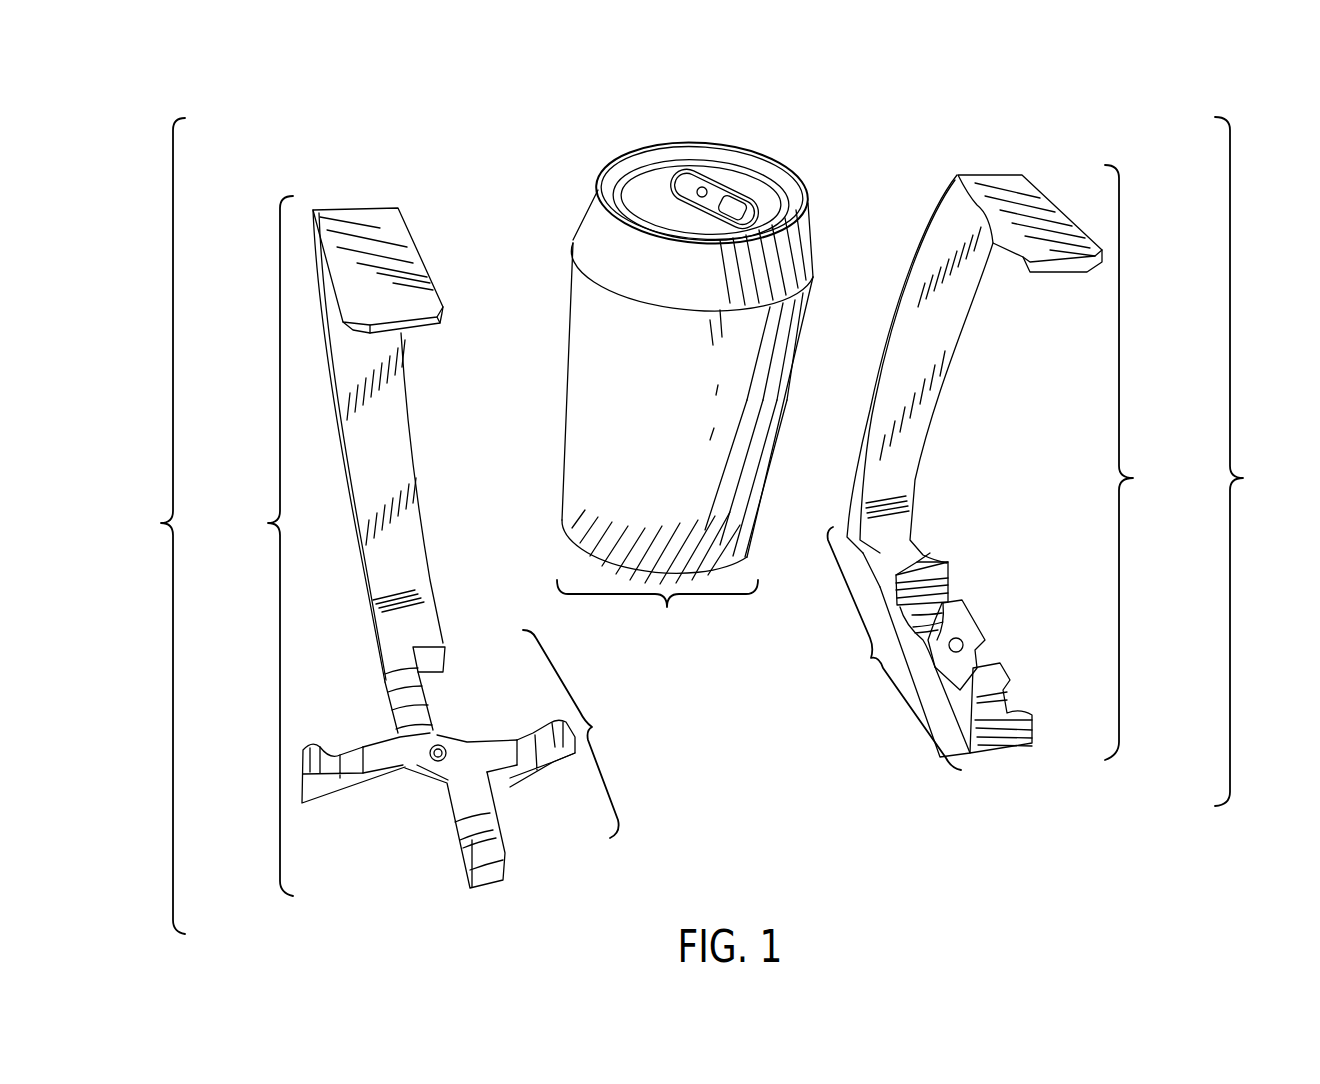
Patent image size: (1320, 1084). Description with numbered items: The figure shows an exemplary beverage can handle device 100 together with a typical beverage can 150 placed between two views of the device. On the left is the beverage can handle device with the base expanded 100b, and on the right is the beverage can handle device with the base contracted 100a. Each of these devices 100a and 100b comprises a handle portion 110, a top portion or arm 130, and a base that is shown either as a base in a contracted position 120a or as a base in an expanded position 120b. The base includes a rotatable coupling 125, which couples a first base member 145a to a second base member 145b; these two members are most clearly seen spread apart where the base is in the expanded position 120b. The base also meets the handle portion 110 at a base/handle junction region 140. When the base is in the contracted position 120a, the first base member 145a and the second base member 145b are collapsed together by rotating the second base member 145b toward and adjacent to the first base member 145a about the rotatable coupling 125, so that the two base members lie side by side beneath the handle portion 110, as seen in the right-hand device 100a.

The beverage can handle device 100 is at (1210, 53).
The beverage can handle device with the base contracted 100a is at (1145, 462).
The beverage can handle device with the base expanded 100b is at (251, 546).
The handle portion 110 is at (388, 402).
The base in a contracted position 120a is at (890, 648).
The base in an expanded position 120b is at (583, 734).
The rotatable coupling 125 is at (440, 746).
The top portion or arm 130 is at (368, 222).
The base/handle junction region 140 is at (413, 625).
The first base member 145a is at (405, 692).
The second base member 145b is at (322, 790).
The beverage can 150 is at (685, 388).